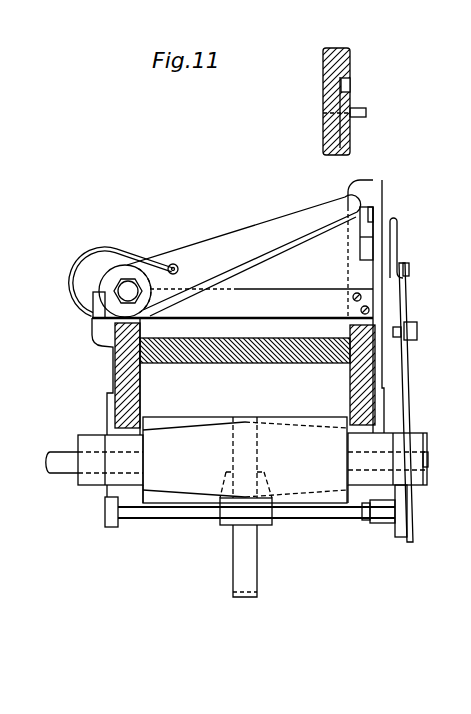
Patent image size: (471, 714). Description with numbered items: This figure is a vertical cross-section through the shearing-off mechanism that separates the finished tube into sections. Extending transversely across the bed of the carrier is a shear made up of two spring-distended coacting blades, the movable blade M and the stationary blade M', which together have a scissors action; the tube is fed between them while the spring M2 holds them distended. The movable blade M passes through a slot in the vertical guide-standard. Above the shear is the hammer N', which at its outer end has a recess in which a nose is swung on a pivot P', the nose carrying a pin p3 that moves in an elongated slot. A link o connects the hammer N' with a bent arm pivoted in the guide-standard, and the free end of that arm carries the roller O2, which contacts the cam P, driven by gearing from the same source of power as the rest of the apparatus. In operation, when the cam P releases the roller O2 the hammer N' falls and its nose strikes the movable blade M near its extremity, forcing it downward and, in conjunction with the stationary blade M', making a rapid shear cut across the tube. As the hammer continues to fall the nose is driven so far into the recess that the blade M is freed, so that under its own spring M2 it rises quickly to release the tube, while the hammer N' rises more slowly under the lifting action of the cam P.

The hammer N' is at (357, 101).
The pivot P' is at (364, 86).
The pin p3 is at (367, 112).
The spring M2 is at (94, 250).
The movable shear blade M is at (230, 256).
The stationary shear blade M' is at (238, 307).
The link o is at (397, 243).
The roller O2 is at (416, 327).
The cam P is at (418, 402).